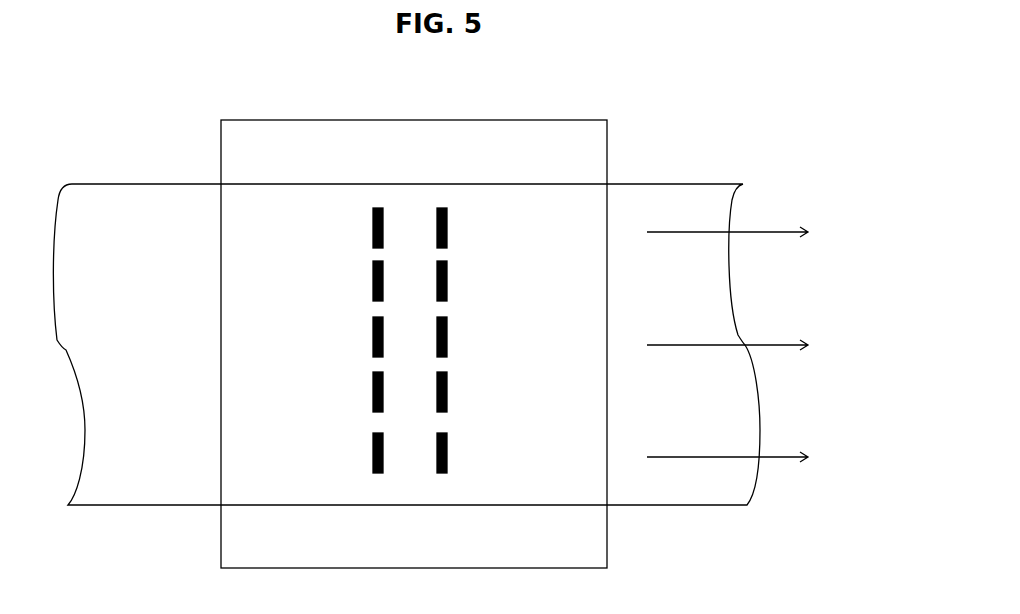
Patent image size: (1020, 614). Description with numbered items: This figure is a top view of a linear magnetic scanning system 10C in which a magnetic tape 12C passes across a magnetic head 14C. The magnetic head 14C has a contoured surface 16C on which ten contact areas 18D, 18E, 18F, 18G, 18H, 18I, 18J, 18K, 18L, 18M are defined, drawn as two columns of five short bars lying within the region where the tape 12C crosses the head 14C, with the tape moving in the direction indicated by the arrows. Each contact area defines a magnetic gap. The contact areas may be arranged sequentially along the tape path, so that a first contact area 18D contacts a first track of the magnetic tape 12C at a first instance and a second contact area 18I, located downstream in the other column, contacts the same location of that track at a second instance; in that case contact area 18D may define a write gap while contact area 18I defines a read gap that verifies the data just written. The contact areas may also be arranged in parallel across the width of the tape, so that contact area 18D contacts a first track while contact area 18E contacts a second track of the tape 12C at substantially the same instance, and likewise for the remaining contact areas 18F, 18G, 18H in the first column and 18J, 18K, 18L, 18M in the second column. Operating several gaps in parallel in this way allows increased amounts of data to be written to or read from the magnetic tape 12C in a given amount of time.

The linear magnetic scanning system 10C is at (680, 118).
The magnetic tape 12C is at (182, 200).
The magnetic head 14C is at (253, 103).
The contoured surface 16C is at (525, 138).
The first contact area 18D is at (372, 218).
The second contact area 18E is at (372, 270).
The contact area 18F is at (372, 327).
The contact area 18G is at (372, 383).
The contact area 18H is at (372, 443).
The second contact area 18I is at (448, 218).
The contact area 18J is at (448, 270).
The contact area 18K is at (448, 327).
The contact area 18L is at (448, 383).
The contact area 18M is at (448, 443).